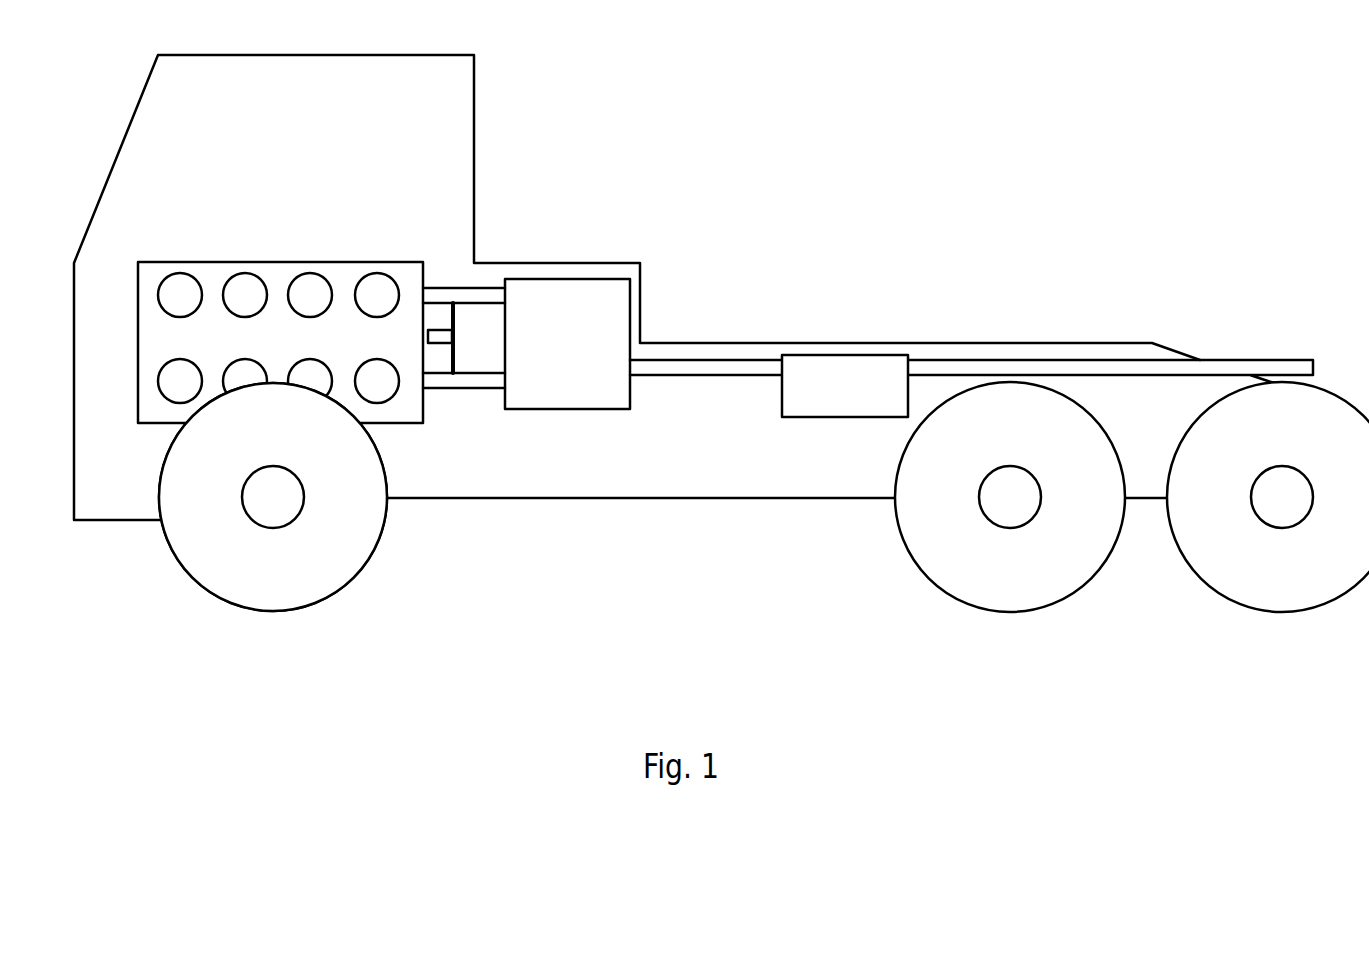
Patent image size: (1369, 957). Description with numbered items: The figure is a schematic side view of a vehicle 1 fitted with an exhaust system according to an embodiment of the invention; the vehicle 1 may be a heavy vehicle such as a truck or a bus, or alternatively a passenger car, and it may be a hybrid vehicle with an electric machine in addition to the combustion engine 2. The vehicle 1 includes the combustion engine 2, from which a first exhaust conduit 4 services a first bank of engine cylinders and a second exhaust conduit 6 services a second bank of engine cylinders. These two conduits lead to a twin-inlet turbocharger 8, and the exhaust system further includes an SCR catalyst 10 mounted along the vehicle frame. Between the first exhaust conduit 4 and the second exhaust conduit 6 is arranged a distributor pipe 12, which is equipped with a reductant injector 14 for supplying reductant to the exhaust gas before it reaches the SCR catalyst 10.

The vehicle 1 is at (631, 121).
The combustion engine 2 is at (289, 356).
The first exhaust conduit 4 is at (437, 292).
The second exhaust conduit 6 is at (492, 382).
The twin-inlet turbocharger 8 is at (577, 356).
The SCR catalyst 10 is at (860, 399).
The distributor pipe 12 is at (455, 325).
The reductant injector 14 is at (437, 338).